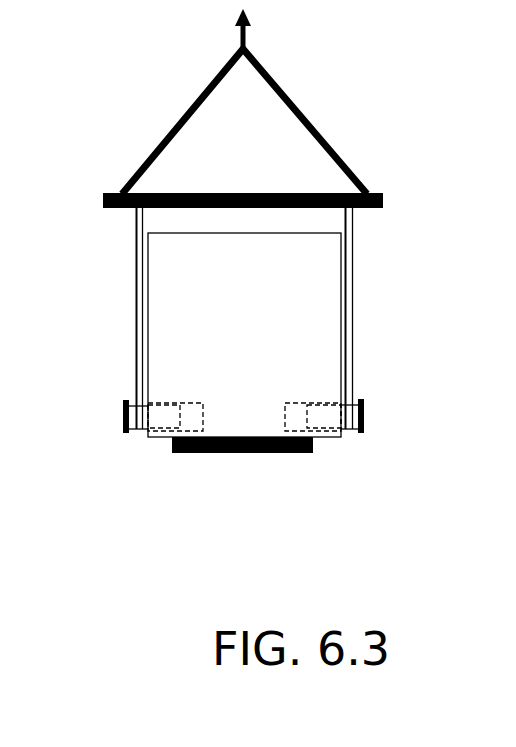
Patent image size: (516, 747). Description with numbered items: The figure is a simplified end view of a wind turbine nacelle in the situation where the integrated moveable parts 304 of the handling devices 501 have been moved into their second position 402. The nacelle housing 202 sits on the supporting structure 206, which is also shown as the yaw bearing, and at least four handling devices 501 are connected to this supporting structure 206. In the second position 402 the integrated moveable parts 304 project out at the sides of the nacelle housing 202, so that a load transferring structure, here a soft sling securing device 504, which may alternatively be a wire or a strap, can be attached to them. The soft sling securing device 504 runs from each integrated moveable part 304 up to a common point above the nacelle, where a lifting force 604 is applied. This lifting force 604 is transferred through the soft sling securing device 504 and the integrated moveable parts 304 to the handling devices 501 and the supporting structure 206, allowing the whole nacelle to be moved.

The lifting force 604 is at (248, 23).
The nacelle housing 202 is at (313, 235).
The soft sling securing device 504 is at (133, 244).
The handling device 501 is at (289, 389).
The second position 402 is at (180, 418).
The integrated moveable part 304 is at (123, 435).
The supporting structure 206 is at (257, 453).